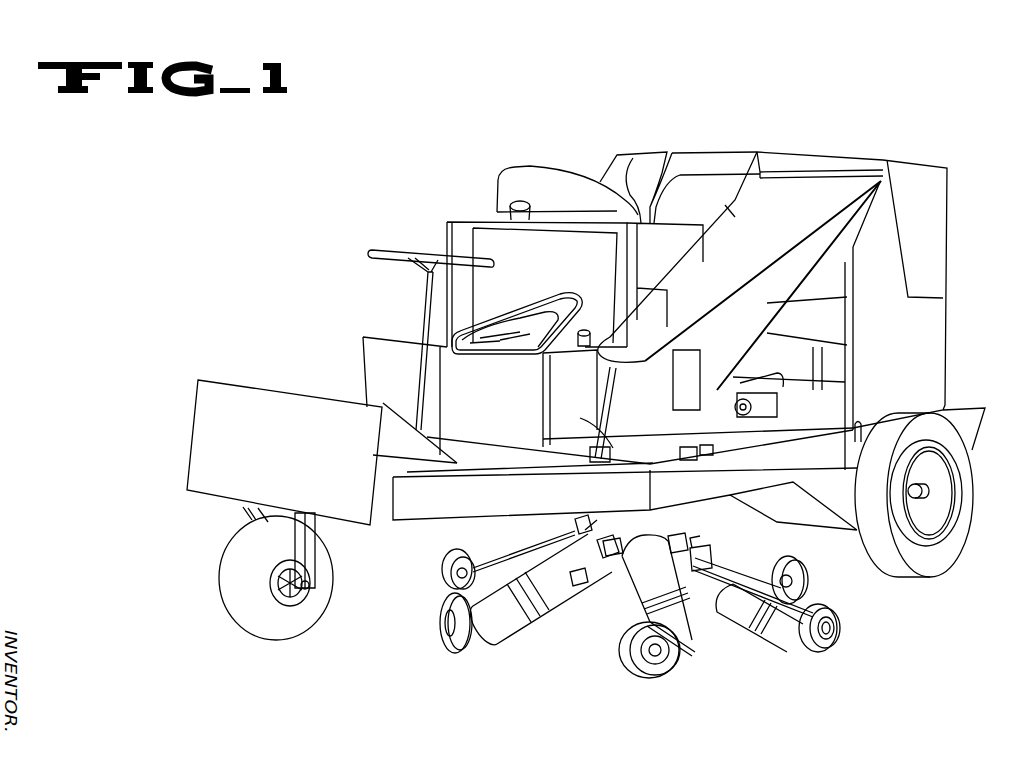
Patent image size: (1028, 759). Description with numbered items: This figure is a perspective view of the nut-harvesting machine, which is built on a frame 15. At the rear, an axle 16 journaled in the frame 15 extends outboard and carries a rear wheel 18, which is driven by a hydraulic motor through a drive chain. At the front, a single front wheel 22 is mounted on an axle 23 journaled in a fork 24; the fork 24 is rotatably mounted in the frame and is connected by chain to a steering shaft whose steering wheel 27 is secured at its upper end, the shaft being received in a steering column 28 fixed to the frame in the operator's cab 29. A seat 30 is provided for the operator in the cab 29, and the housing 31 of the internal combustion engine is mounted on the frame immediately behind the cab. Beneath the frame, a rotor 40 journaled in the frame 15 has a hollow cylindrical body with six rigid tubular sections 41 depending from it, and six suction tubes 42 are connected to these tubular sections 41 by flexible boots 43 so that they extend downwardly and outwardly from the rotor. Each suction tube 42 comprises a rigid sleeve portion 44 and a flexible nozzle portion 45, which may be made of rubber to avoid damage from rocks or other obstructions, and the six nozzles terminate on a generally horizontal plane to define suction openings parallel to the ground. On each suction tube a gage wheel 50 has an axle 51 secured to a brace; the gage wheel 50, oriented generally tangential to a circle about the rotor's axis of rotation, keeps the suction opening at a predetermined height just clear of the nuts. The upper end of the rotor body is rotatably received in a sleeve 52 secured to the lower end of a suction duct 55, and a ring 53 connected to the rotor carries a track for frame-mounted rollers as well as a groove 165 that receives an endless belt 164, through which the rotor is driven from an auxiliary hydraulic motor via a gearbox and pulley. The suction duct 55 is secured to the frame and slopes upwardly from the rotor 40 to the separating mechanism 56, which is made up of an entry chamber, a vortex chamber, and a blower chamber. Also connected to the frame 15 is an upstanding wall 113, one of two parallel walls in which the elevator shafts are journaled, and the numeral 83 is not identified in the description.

The frame 15 is at (440, 506).
The axle 16 is at (922, 489).
The rear wheel 18 is at (965, 513).
The front wheel 22 is at (232, 547).
The axle 23 is at (305, 590).
The fork 24 is at (250, 517).
The steering wheel 27 is at (408, 266).
The steering column 28 is at (420, 311).
The operator's cab 29 is at (494, 246).
The seat 30 is at (555, 312).
The housing 31 is at (473, 226).
The rotor 40 is at (626, 614).
The tubular sections 41 is at (672, 512).
The suction tubes 42 is at (512, 560).
The flexible boots 43 is at (622, 556).
The sleeve portion 44 is at (563, 590).
The nozzle portion 45 is at (503, 637).
The gage wheel 50 is at (441, 630).
The axle 51 is at (806, 582).
The sleeve 52 is at (610, 419).
The ring 53 is at (600, 440).
The suction duct 55 is at (772, 318).
The separating mechanism 56 is at (937, 216).
The engine hood 83 is at (566, 187).
The upstanding wall 113 is at (937, 325).
The endless belt 164 is at (803, 428).
The groove 165 is at (648, 435).